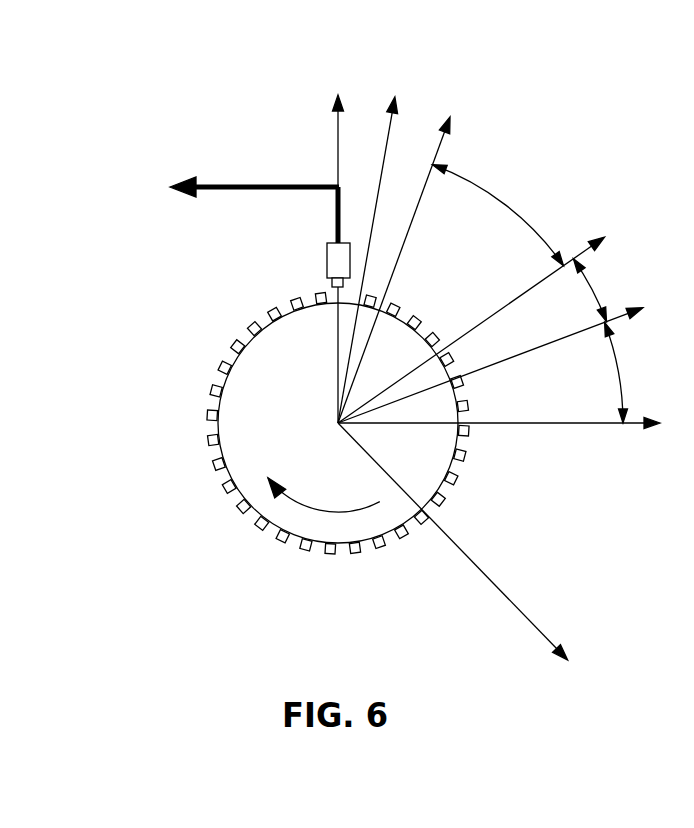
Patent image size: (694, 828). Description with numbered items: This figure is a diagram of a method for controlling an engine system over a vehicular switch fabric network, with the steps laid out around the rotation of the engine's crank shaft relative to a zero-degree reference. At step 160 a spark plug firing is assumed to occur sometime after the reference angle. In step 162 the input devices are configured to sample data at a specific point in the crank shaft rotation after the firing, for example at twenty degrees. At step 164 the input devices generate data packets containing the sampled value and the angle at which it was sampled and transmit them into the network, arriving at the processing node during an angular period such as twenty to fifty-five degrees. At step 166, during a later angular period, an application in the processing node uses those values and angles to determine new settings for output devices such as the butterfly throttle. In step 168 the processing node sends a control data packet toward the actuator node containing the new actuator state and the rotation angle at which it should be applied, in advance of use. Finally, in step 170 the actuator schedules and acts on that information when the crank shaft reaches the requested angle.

The spark plug firing step 160 is at (337, 128).
The data sampling step 162 is at (390, 127).
The data packet transmission step 164 is at (512, 214).
The output setting determination step 166 is at (596, 290).
The control data packet sending step 168 is at (618, 376).
The actuator scheduling and acting step 170 is at (543, 628).